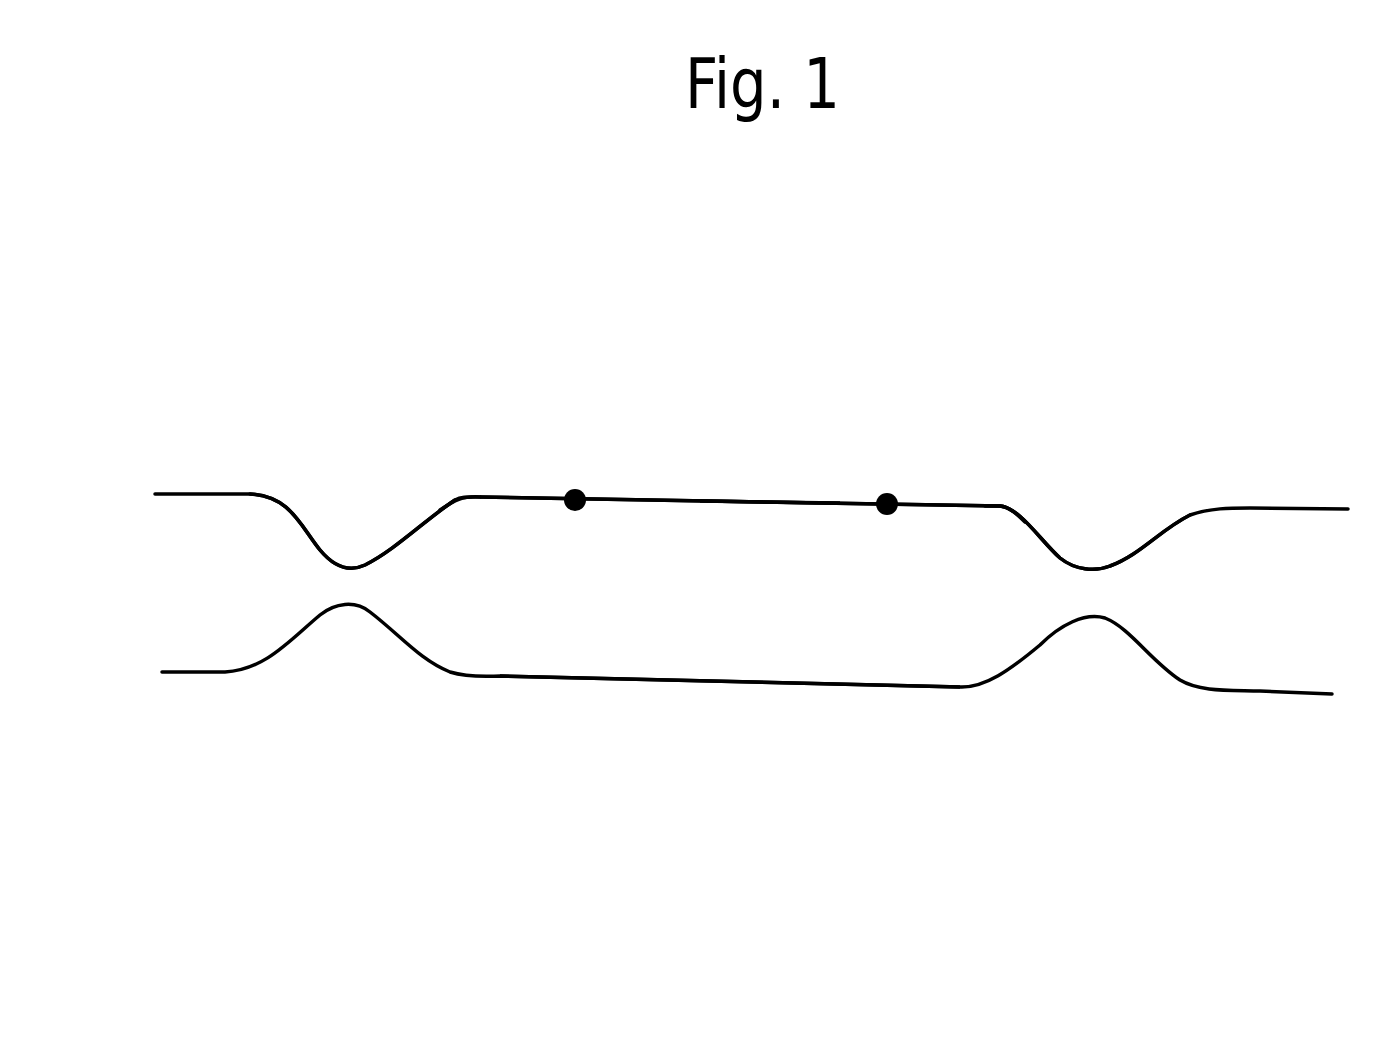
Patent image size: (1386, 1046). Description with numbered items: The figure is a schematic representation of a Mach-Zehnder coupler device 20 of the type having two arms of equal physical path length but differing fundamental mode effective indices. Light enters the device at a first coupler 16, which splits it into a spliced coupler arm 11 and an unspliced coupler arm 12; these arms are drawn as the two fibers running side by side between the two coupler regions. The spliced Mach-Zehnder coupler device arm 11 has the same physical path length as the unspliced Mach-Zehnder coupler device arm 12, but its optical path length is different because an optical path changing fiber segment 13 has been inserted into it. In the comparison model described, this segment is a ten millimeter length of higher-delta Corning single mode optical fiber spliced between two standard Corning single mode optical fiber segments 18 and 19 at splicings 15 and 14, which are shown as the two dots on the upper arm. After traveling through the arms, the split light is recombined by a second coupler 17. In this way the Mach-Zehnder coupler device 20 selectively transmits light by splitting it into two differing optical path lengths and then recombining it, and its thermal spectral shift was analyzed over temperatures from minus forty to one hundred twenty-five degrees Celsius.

The spliced Mach-Zehnder coupler device arm 11 is at (726, 374).
The unspliced Mach-Zehnder coupler device arm 12 is at (759, 754).
The optical path changing fiber segment 13 is at (765, 502).
The splicing 14 is at (888, 500).
The splicing 15 is at (577, 492).
The first coupler 16 is at (338, 516).
The second coupler 17 is at (1114, 498).
The single mode optical fiber segment 18 is at (474, 497).
The single mode optical fiber segment 19 is at (1003, 505).
The Mach-Zehnder coupler device 20 is at (322, 826).